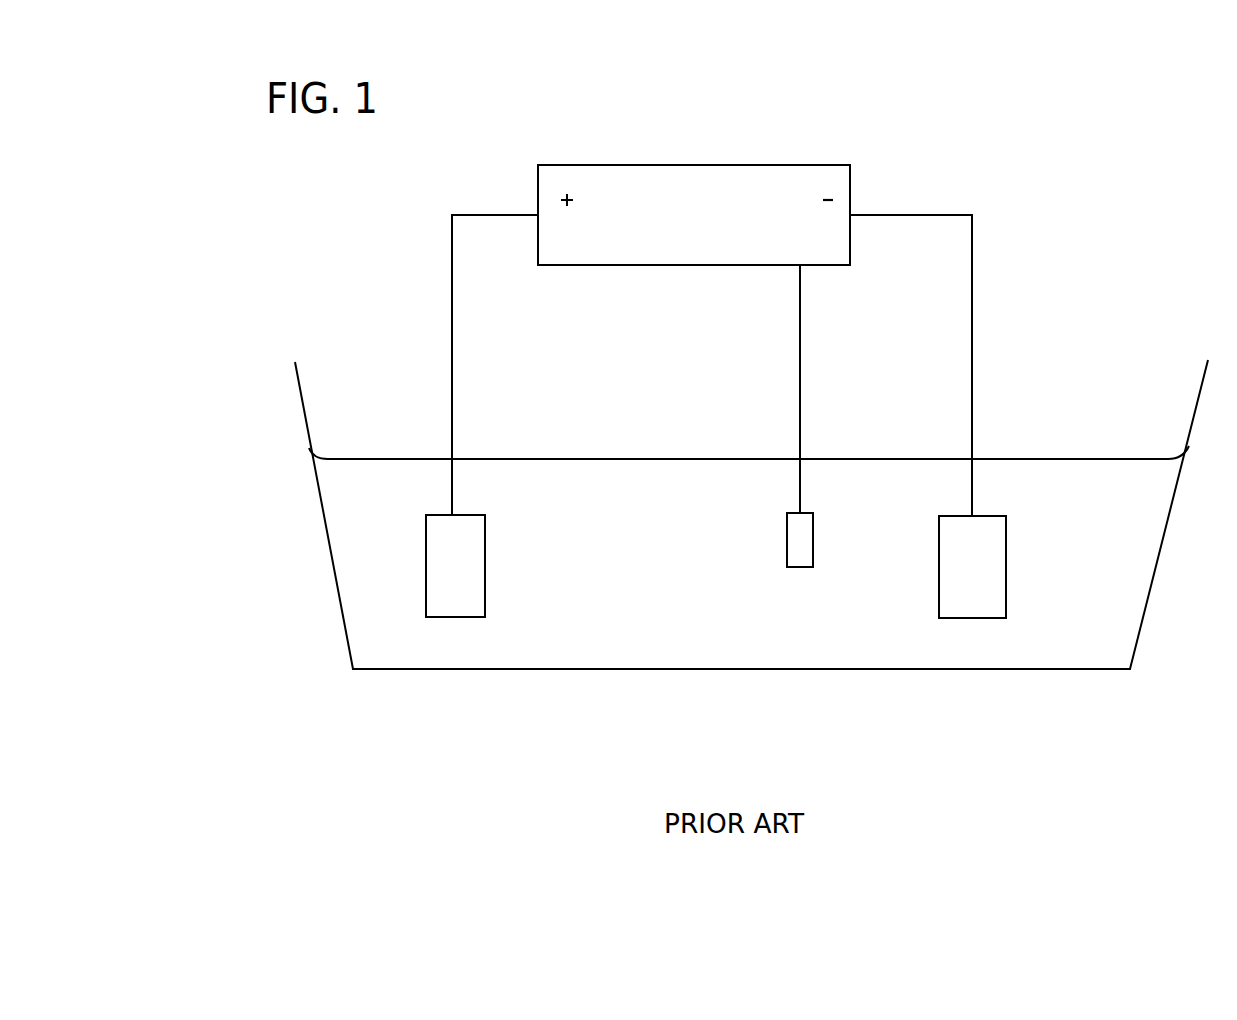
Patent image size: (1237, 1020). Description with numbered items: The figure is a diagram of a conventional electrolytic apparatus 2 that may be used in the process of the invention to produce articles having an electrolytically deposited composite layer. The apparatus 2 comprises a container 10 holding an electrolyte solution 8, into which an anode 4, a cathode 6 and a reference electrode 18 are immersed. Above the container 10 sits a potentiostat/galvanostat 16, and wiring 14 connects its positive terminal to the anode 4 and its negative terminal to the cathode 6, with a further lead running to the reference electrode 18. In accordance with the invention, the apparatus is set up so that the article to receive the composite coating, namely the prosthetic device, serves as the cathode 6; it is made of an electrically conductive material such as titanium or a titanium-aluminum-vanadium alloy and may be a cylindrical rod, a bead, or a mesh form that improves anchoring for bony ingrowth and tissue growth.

The electrolytic apparatus 2 is at (227, 329).
The anode 4 is at (462, 601).
The cathode 6 is at (975, 588).
The electrolyte solution 8 is at (647, 625).
The container 10 is at (297, 386).
The wiring 14 is at (452, 282).
The potentiostat/galvanostat 16 is at (737, 175).
The reference electrode 18 is at (800, 548).